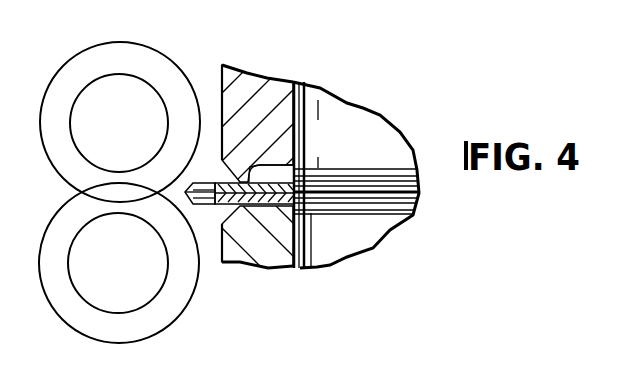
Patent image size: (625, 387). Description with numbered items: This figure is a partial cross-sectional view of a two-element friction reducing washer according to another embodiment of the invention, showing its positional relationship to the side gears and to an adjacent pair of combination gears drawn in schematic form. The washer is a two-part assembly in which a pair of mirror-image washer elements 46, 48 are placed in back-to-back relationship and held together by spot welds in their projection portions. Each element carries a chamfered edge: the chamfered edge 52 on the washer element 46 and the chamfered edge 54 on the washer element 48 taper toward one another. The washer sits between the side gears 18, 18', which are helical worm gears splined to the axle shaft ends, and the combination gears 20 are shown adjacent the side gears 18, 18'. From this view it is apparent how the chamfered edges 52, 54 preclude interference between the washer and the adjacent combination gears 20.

The combination gear 20 is at (103, 45).
The chamfered edge 52 is at (190, 192).
The chamfered edge 54 is at (194, 206).
The washer element 46 is at (258, 159).
The side gear 18 is at (356, 175).
The side gear 18' is at (356, 224).
The washer element 48 is at (264, 207).